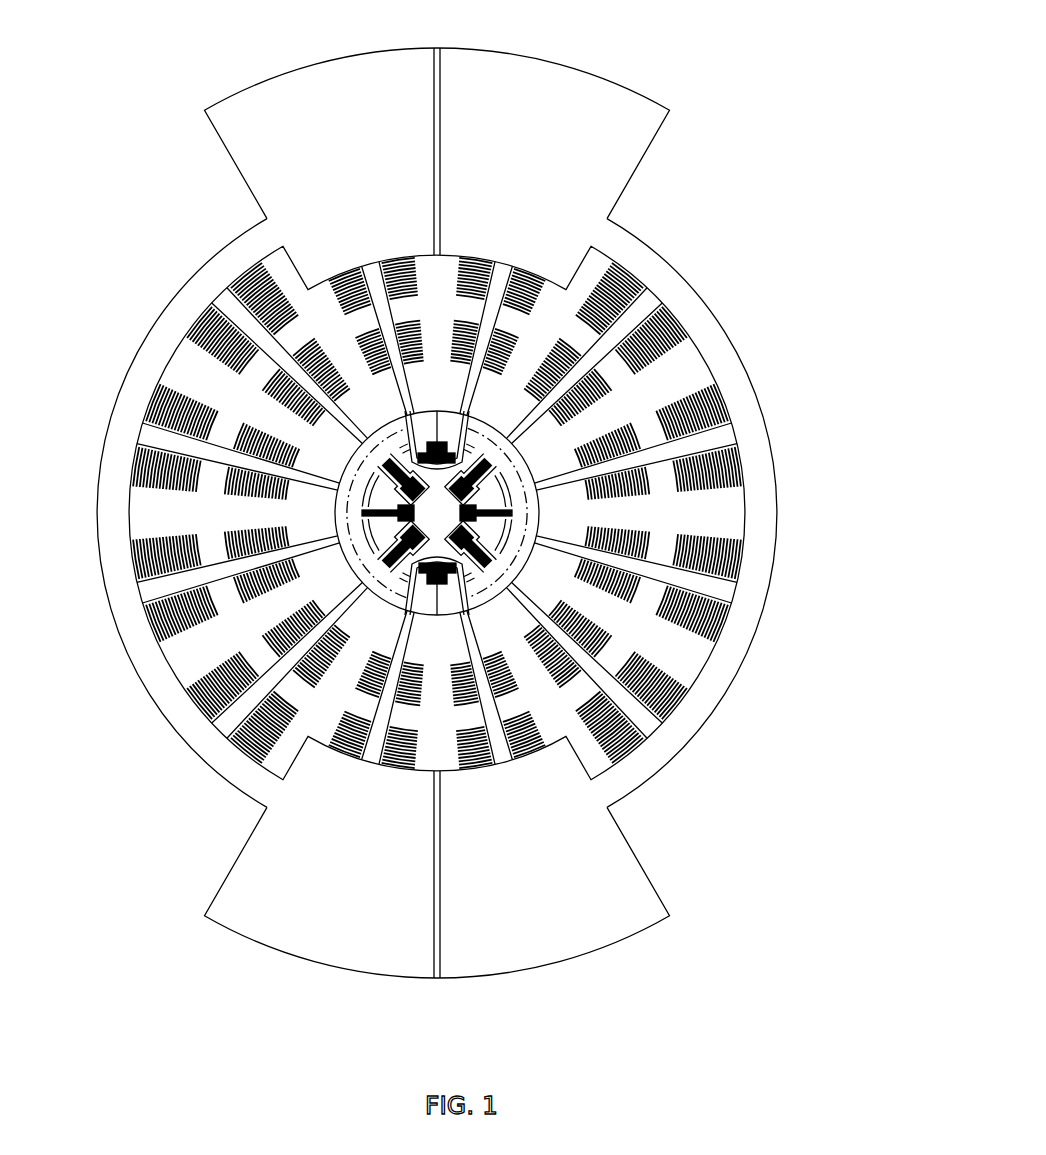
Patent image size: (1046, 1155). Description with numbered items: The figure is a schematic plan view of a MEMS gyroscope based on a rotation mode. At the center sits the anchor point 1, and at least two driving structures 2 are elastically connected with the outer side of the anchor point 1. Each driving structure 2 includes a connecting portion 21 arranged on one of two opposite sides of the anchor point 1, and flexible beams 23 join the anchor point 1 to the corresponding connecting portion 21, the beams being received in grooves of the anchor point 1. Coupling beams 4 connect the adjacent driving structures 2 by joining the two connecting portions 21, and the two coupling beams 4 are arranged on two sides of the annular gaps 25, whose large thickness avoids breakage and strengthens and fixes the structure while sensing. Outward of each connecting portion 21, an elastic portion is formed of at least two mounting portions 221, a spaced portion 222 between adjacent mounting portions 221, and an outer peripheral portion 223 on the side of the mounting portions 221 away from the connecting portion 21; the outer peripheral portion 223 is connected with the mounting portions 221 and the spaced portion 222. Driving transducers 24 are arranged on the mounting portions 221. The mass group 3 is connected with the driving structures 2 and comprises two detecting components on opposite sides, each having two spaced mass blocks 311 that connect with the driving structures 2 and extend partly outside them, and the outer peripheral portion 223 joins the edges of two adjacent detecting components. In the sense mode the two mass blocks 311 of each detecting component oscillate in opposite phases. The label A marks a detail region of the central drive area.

The anchor point 1 is at (437, 512).
The driving structure 2 is at (400, 511).
The mass group 3 is at (483, 496).
The coupling beam 4 is at (300, 677).
The connecting portion 21 is at (518, 523).
The flexible beam 23 is at (560, 578).
The driving transducer 24 is at (160, 627).
The annular gap 25 is at (575, 745).
The mounting portion 221 is at (713, 521).
The spaced portion 222 is at (153, 438).
The outer peripheral portion 223 is at (777, 515).
The mass block 311 is at (580, 888).
The detail region A is at (558, 420).